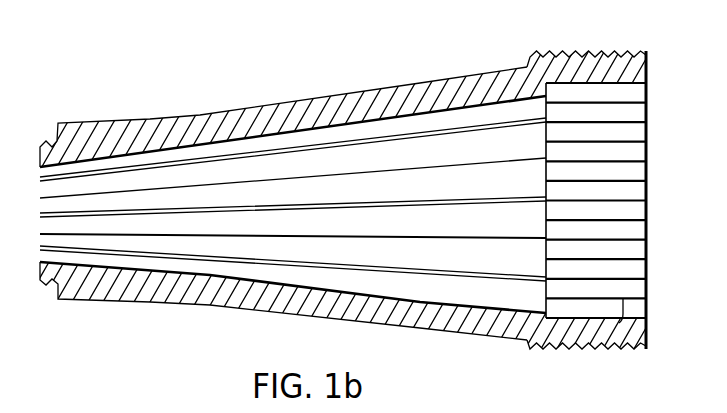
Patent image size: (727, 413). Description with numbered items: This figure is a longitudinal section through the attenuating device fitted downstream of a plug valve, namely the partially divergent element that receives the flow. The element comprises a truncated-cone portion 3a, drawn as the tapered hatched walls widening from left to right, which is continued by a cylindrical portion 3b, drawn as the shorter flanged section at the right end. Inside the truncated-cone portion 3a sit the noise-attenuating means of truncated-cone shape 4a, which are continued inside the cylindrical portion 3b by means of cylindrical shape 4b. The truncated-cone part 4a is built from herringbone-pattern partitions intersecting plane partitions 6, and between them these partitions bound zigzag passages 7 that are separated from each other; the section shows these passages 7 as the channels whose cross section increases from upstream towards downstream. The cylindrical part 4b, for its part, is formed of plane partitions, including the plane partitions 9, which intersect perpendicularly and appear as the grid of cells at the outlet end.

The truncated-cone portion 3a is at (322, 102).
The cylindrical portion 3b is at (578, 53).
The truncated-cone part 4a is at (371, 278).
The cylindrical part 4b is at (560, 333).
The plane partitions 6 is at (181, 273).
The zigzag passages 7 is at (460, 288).
The plane partitions 9 is at (619, 323).